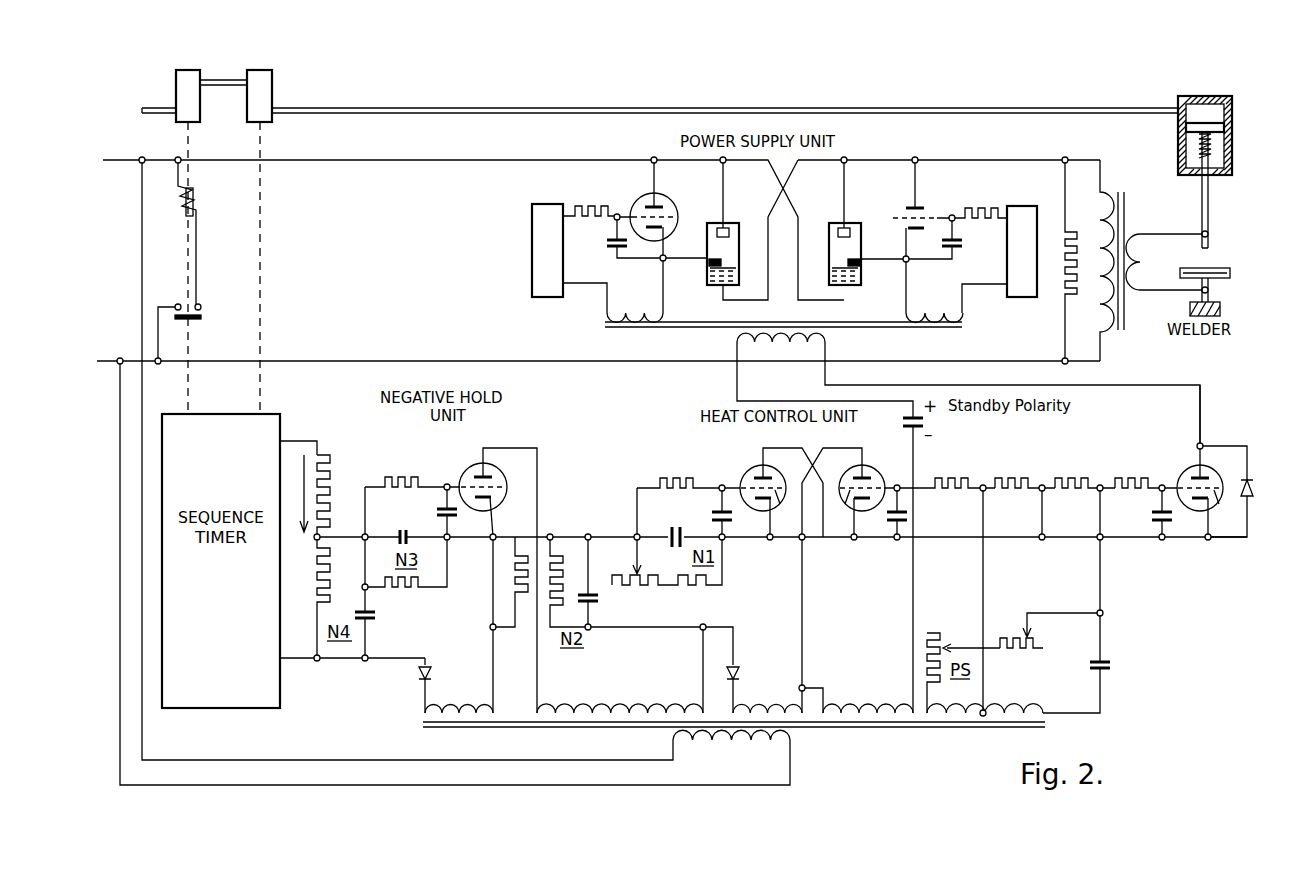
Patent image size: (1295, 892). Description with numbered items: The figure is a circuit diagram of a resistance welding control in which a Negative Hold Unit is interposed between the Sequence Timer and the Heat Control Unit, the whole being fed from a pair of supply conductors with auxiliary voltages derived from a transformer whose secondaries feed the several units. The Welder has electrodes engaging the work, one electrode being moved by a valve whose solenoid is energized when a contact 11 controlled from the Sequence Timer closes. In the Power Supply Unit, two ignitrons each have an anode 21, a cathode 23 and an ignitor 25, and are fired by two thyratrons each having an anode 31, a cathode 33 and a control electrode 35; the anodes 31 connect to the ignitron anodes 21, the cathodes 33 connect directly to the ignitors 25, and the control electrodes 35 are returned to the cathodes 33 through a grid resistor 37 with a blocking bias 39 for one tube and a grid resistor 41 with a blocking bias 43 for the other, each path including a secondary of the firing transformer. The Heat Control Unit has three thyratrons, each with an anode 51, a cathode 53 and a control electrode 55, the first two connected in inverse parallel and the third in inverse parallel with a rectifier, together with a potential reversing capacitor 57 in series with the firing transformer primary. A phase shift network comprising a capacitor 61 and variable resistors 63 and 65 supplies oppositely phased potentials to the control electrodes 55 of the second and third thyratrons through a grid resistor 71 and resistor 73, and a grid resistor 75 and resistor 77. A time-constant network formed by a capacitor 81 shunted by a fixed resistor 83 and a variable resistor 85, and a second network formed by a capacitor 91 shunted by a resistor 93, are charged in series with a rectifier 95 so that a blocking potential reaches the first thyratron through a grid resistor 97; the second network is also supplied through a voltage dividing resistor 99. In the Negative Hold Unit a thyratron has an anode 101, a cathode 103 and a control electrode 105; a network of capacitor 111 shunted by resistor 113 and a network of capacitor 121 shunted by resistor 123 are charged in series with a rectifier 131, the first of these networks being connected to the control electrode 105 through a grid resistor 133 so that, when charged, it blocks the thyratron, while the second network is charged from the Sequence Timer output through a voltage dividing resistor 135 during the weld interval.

The contact 11 is at (201, 314).
The anode 21 is at (826, 232).
The cathode 23 is at (860, 296).
The ignitor 25 is at (872, 270).
The anode 31 is at (920, 202).
The cathode 33 is at (896, 244).
The control electrode 35 is at (892, 214).
The grid resistor 37 is at (586, 206).
The blocking bias 39 is at (531, 240).
The grid resistor 41 is at (980, 208).
The blocking bias 43 is at (1026, 206).
The anode 51 is at (1220, 462).
The cathode 53 is at (1190, 516).
The control electrode 55 is at (1007, 510).
The potential reversing capacitor 57 is at (924, 424).
The capacitor 61 is at (1111, 665).
The variable resistor 63 is at (1012, 627).
The variable resistor 65 is at (940, 636).
The grid resistor 71 is at (950, 478).
The resistor 73 is at (1012, 478).
The grid resistor 75 is at (1132, 478).
The resistor 77 is at (1072, 478).
The capacitor 81 is at (676, 522).
The fixed resistor 83 is at (688, 588).
The variable resistor 85 is at (650, 568).
The capacitor 91 is at (599, 598).
The resistor 93 is at (556, 548).
The rectifier 95 is at (737, 670).
The grid resistor 97 is at (660, 465).
The voltage dividing resistor 99 is at (518, 628).
The anode 101 is at (495, 468).
The cathode 103 is at (466, 516).
The control electrode 105 is at (504, 498).
The capacitor 111 is at (403, 522).
The resistor 113 is at (408, 590).
The capacitor 121 is at (376, 616).
The resistor 123 is at (328, 575).
The rectifier 131 is at (418, 672).
The grid resistor 133 is at (398, 470).
The voltage dividing resistor 135 is at (330, 474).